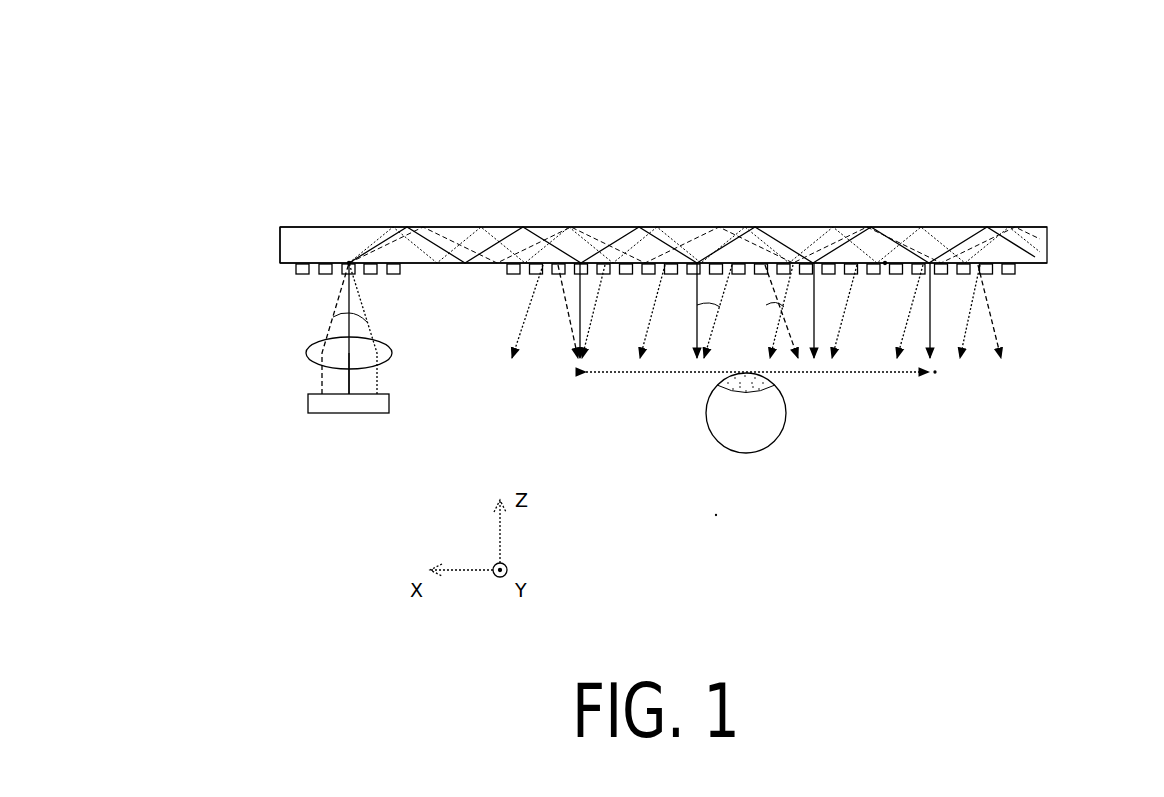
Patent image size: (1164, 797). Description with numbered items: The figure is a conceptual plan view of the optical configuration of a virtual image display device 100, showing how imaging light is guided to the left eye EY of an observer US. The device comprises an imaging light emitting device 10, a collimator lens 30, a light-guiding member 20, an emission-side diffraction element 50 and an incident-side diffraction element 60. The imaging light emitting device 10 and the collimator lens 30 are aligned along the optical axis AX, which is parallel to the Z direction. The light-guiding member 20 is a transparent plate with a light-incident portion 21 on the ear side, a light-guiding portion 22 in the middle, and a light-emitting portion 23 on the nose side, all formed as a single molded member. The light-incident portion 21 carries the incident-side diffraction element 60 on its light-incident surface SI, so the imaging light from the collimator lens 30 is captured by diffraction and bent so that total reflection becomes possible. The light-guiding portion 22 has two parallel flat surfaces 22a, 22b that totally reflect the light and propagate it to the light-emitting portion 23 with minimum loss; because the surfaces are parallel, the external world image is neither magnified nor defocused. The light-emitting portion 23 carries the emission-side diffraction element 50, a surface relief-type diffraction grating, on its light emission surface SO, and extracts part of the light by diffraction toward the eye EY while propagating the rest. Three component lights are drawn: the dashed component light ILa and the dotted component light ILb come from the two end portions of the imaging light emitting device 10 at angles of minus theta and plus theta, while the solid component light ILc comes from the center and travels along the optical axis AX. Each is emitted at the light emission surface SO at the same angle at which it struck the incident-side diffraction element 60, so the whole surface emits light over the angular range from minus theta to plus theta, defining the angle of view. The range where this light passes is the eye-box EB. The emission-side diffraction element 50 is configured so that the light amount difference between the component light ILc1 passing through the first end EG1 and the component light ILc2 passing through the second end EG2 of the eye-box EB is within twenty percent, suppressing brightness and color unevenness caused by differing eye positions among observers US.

The virtual image display device 100 is at (400, 110).
The imaging light emitting device 10 is at (308, 398).
The light-guiding member 20 is at (663, 195).
The light-incident portion 21 is at (357, 226).
The light-guiding portion 22 is at (462, 226).
The flat surface 22a is at (497, 265).
The flat surface 22b is at (492, 226).
The light-emitting portion 23 is at (795, 240).
The collimator lens 30 is at (310, 350).
The emission-side diffraction element 50 is at (829, 325).
The incident-side diffraction element 60 is at (272, 268).
The light-incident surface SI is at (349, 262).
The light emission surface SO is at (885, 262).
The optical axis AX is at (375, 345).
The component light ILa is at (320, 372).
The component light ILb is at (385, 360).
The component light ILc is at (353, 380).
The component light ILc1 is at (583, 303).
The component light ILc2 is at (927, 300).
The eye-box EB is at (903, 375).
The first end EG1 is at (580, 375).
The second end EG2 is at (937, 375).
The eye EY is at (752, 437).
The observer US is at (714, 522).